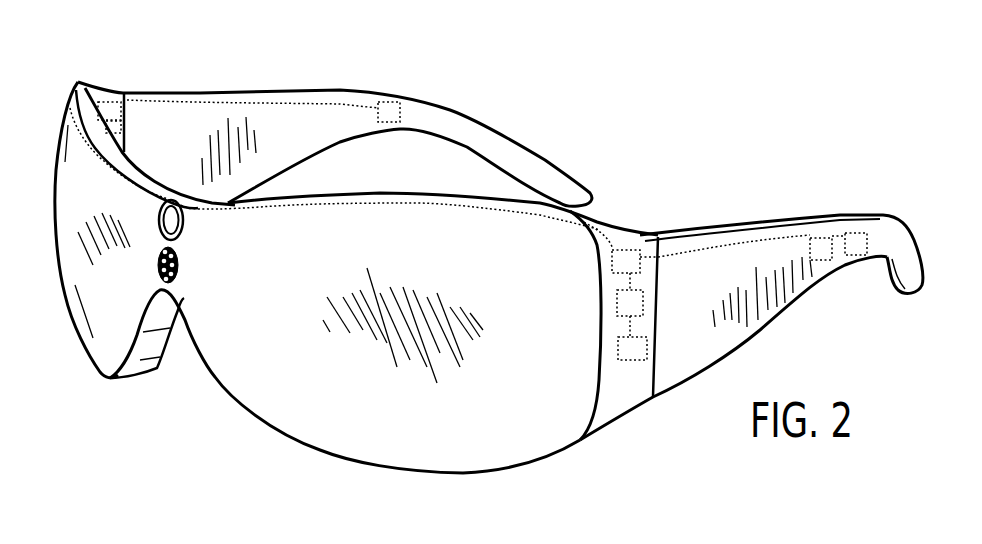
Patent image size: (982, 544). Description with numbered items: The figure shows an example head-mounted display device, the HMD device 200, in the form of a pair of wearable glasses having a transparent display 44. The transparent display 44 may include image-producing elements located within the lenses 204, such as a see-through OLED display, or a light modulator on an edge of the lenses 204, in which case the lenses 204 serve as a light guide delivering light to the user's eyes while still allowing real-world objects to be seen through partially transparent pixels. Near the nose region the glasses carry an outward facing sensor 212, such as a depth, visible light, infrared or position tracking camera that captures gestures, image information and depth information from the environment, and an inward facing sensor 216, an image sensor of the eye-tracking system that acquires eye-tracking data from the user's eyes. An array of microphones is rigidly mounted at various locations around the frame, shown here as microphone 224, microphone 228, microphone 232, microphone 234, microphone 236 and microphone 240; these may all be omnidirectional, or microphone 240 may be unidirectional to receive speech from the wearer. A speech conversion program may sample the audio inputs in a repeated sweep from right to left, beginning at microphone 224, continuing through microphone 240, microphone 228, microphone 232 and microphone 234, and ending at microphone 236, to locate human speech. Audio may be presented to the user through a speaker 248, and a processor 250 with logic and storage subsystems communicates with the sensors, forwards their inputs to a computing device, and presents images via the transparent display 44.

The HMD device 200 is at (93, 422).
The lenses 204 is at (103, 347).
The transparent display 44 is at (272, 393).
The outward facing sensor 212 is at (186, 214).
The inward facing sensor 216 is at (183, 263).
The microphone 224 is at (859, 233).
The microphone 228 is at (633, 249).
The microphone 232 is at (121, 101).
The microphone 234 is at (126, 118).
The microphone 236 is at (388, 101).
The microphone 240 is at (644, 292).
The speaker 248 is at (808, 240).
The processor 250 is at (648, 338).